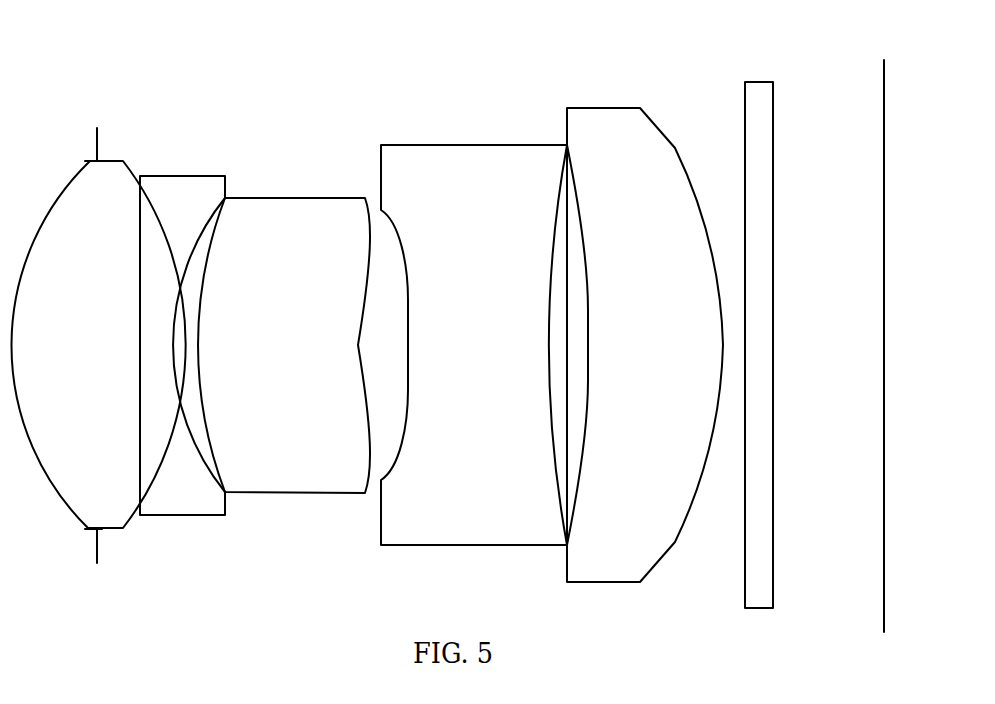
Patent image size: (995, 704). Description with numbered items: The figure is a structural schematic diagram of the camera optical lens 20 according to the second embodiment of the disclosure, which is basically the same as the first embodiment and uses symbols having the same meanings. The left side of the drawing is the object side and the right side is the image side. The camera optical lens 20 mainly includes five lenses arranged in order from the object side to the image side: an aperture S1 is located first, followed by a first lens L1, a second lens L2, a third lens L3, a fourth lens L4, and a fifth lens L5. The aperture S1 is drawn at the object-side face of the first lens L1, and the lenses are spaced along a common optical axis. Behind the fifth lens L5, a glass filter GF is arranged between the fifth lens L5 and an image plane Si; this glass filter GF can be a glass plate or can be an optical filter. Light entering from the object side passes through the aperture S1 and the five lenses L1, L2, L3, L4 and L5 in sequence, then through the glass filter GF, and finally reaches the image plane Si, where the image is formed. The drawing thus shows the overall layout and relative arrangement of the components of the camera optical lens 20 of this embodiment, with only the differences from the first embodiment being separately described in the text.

The camera optical lens 20 is at (474, 53).
The aperture S1 is at (94, 336).
The first lens L1 is at (98, 334).
The second lens L2 is at (182, 335).
The third lens L3 is at (284, 334).
The fourth lens L4 is at (474, 334).
The fifth lens L5 is at (645, 333).
The glass filter GF is at (757, 333).
The image plane Si is at (878, 335).